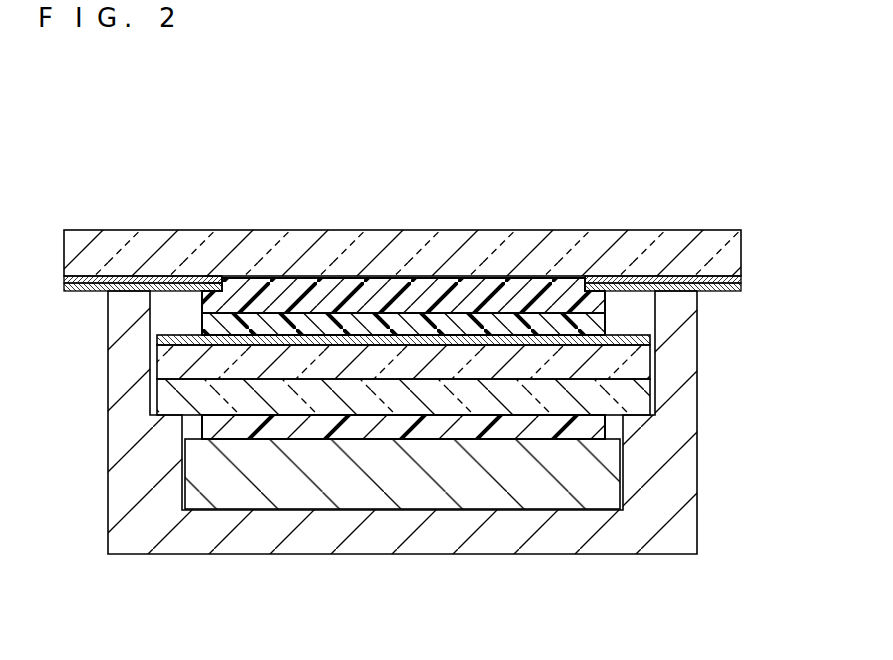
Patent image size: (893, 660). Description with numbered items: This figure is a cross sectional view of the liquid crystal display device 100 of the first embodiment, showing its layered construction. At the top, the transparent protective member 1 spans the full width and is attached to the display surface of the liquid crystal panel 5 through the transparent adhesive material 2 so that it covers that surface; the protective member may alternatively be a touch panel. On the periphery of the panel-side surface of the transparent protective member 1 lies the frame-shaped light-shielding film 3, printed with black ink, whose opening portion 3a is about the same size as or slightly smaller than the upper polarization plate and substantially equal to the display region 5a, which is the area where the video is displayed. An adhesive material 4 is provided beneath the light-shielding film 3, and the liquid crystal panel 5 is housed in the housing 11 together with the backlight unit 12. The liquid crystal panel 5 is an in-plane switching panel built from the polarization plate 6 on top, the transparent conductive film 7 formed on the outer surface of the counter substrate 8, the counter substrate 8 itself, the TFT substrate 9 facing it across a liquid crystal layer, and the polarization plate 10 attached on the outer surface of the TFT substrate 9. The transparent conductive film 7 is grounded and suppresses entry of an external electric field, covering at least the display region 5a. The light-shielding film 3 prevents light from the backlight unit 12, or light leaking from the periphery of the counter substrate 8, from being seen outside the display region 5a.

The liquid crystal display device 100 is at (97, 107).
The transparent protective member 1 is at (728, 247).
The transparent adhesive material 2 is at (463, 285).
The light-shielding film 3 is at (733, 280).
The opening portion 3a is at (240, 286).
The adhesive material 4 is at (733, 289).
The liquid crystal panel 5 is at (47, 305).
The display region 5a is at (585, 575).
The polarization plate 6 is at (212, 329).
The transparent conductive film 7 is at (168, 341).
The counter substrate 8 is at (168, 362).
The TFT substrate 9 is at (168, 400).
The polarization plate 10 is at (212, 427).
The housing 11 is at (680, 476).
The backlight unit 12 is at (396, 490).